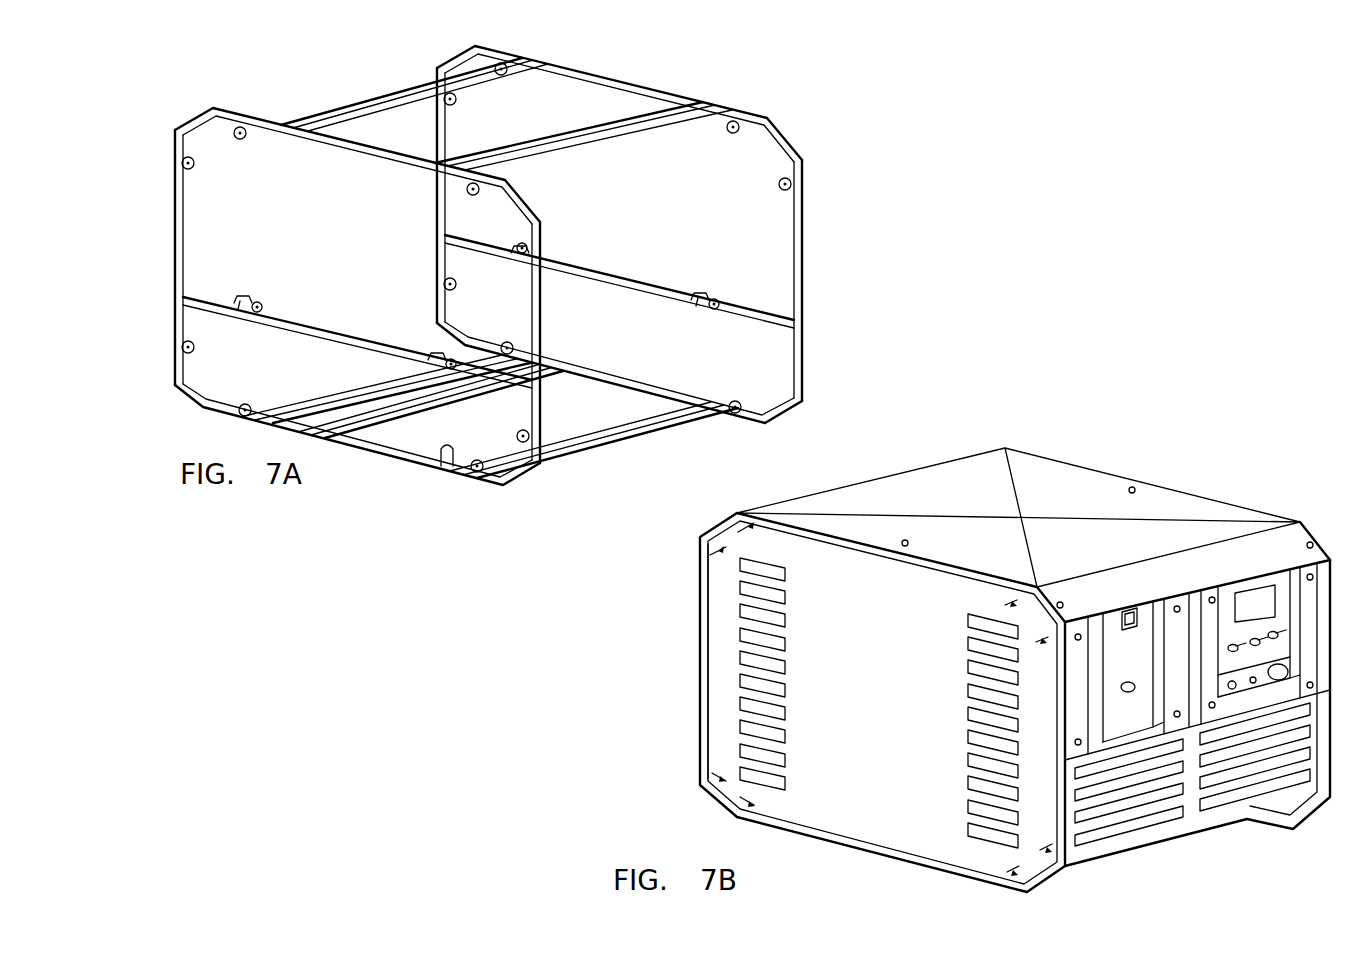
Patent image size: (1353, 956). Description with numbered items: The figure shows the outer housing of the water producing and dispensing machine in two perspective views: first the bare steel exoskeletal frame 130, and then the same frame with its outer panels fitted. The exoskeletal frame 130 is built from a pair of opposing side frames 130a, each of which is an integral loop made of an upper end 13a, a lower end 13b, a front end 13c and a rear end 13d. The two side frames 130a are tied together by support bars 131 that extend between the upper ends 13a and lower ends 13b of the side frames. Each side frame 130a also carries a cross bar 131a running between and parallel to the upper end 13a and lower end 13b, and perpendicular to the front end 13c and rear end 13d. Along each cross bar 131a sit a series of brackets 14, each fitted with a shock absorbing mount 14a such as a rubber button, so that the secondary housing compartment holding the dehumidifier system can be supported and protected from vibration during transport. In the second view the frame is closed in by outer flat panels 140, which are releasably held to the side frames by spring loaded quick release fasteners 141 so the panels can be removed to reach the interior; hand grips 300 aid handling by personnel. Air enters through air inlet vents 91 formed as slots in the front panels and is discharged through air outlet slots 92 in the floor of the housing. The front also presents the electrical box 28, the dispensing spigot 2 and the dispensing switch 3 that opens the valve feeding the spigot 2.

In FIG. 7A, the exoskeletal frame 130 is at (866, 150).
In FIG. 7B, the exoskeletal frame 130 is at (567, 597).
In FIG. 7A, the side frame 130a is at (243, 108).
In FIG. 7B, the side frame 130a is at (700, 660).
In FIG. 7A, the upper end 13a is at (333, 145).
In FIG. 7A, the lower end 13b is at (394, 462).
In FIG. 7A, the front end 13c is at (545, 312).
In FIG. 7B, the front end 13c is at (1328, 784).
In FIG. 7A, the rear end 13d is at (183, 230).
In FIG. 7B, the rear end 13d is at (700, 722).
In FIG. 7A, the support bar 131 is at (366, 100).
In FIG. 7A, the cross bar 131a is at (350, 290).
In FIG. 7A, the bracket 14 is at (246, 298).
In FIG. 7A, the shock absorbing mount 14a is at (243, 310).
In FIG. 7A, the air outlet slot 92 is at (445, 468).
In FIG. 7B, the outer flat panel 140 is at (1085, 475).
In FIG. 7B, the quick release fastener 141 is at (718, 553).
In FIG. 7B, the hand grip 300 is at (720, 532).
In FIG. 7B, the electrical box 28 is at (1300, 520).
In FIG. 7B, the dispensing spigot 2 is at (1128, 632).
In FIG. 7B, the dispensing switch 3 is at (1126, 694).
In FIG. 7B, the air inlet vent 91 is at (1167, 800).